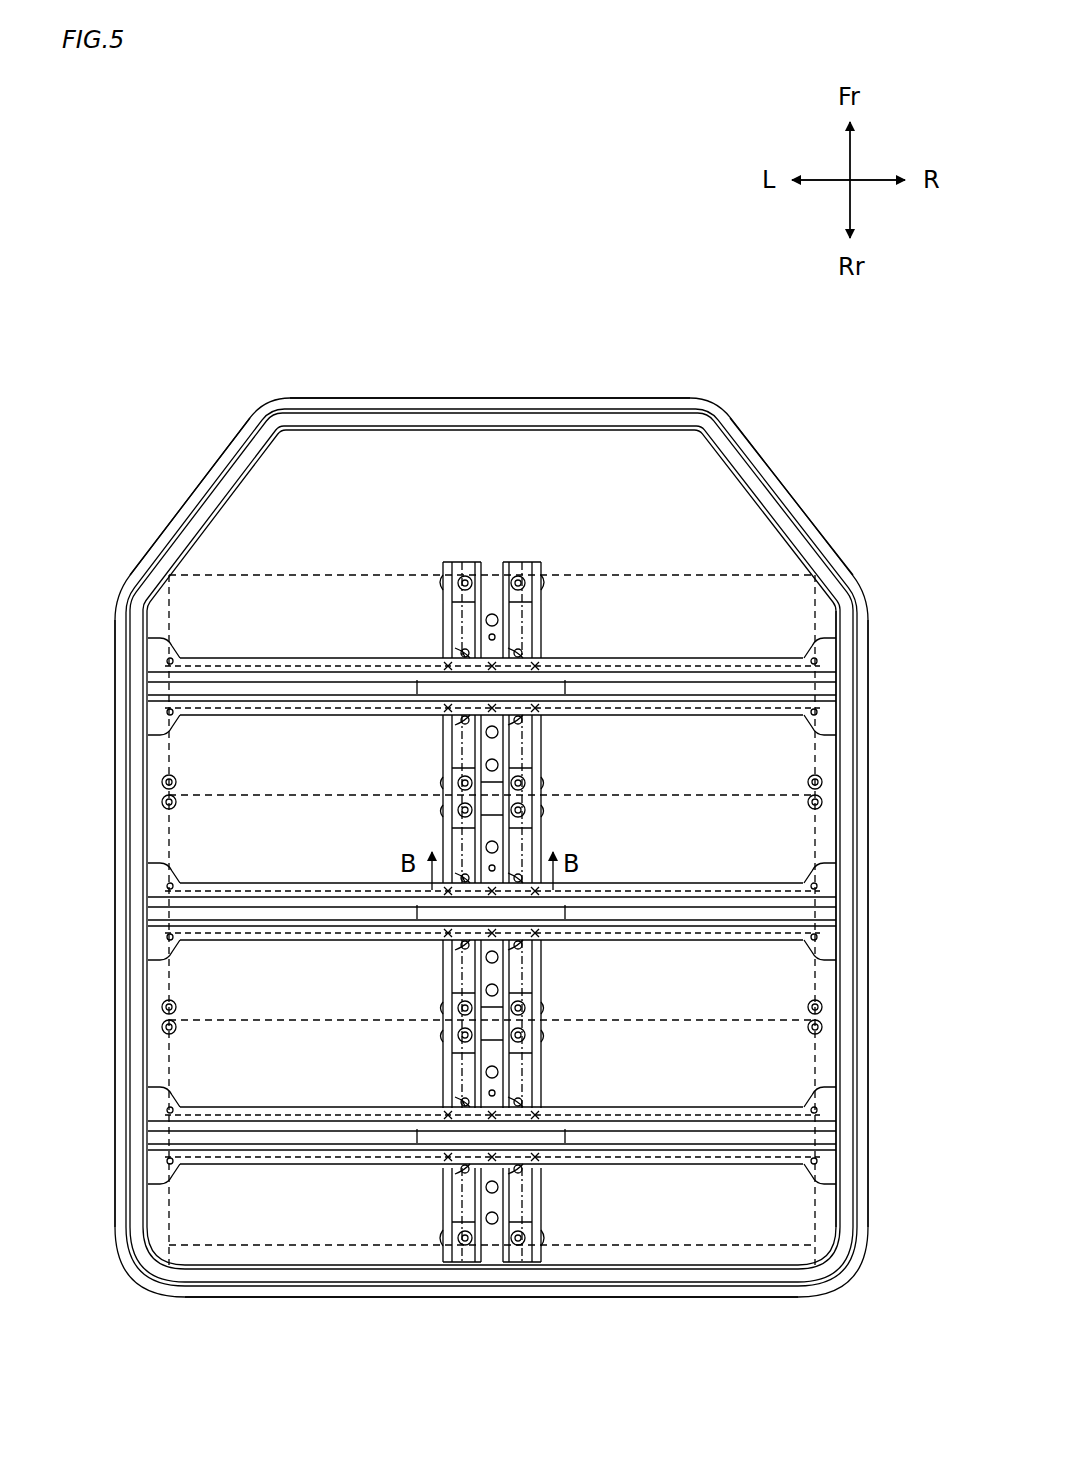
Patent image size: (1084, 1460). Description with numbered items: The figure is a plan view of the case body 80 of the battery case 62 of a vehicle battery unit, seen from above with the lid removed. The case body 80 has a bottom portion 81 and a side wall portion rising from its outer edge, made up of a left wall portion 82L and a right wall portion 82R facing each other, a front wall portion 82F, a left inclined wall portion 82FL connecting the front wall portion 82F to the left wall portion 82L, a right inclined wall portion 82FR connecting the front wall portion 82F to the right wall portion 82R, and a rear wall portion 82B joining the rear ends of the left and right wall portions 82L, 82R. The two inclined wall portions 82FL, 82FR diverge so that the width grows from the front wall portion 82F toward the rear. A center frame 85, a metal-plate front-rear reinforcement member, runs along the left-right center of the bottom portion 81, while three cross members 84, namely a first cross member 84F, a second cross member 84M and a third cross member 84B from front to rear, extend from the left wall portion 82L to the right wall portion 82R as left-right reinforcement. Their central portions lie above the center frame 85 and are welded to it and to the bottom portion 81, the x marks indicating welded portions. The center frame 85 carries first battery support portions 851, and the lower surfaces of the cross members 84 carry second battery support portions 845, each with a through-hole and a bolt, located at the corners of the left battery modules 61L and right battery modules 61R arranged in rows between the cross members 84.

The battery case 62 is at (872, 748).
The case body 80 is at (915, 886).
The front wall portion 82F is at (492, 446).
The left inclined wall portion 82FL is at (240, 484).
The right inclined wall portion 82FR is at (740, 490).
The left wall portion 82L is at (156, 772).
The right wall portion 82R is at (842, 806).
The rear wall portion 82B is at (683, 1262).
The bottom portion 81 is at (765, 568).
The left battery module 61L is at (225, 568).
The right battery module 61R is at (632, 575).
The first cross member 84F is at (836, 690).
The second cross member 84M is at (836, 920).
The third cross member 84B is at (836, 1145).
The cross member 84 is at (723, 941).
The center frame 85 is at (463, 556).
The first battery support portion 851 is at (447, 578).
The second battery support portion 845 is at (470, 650).